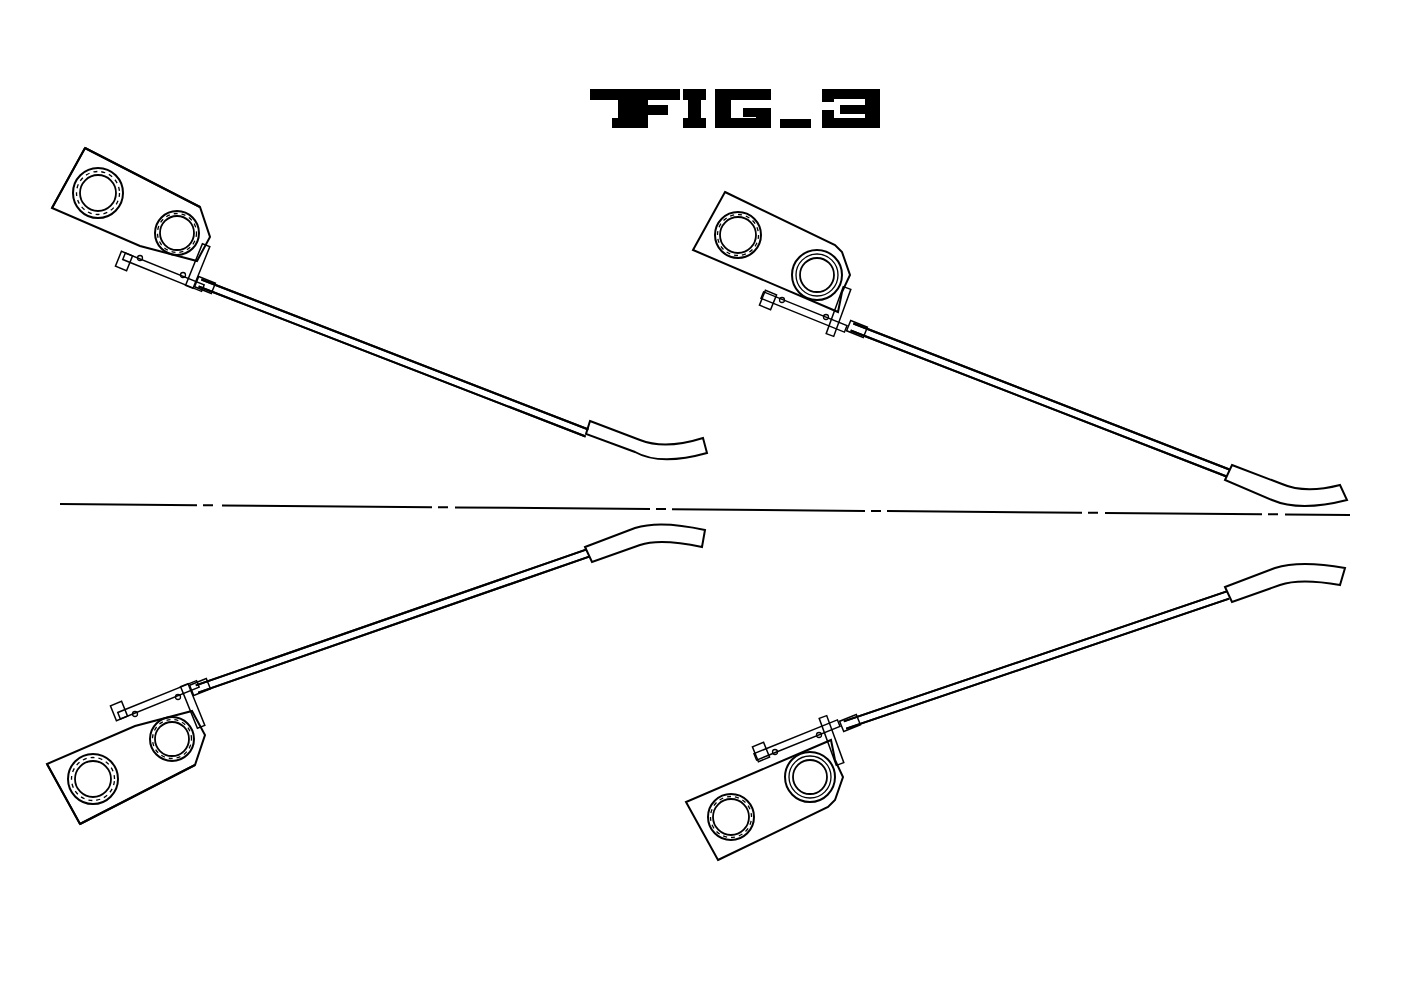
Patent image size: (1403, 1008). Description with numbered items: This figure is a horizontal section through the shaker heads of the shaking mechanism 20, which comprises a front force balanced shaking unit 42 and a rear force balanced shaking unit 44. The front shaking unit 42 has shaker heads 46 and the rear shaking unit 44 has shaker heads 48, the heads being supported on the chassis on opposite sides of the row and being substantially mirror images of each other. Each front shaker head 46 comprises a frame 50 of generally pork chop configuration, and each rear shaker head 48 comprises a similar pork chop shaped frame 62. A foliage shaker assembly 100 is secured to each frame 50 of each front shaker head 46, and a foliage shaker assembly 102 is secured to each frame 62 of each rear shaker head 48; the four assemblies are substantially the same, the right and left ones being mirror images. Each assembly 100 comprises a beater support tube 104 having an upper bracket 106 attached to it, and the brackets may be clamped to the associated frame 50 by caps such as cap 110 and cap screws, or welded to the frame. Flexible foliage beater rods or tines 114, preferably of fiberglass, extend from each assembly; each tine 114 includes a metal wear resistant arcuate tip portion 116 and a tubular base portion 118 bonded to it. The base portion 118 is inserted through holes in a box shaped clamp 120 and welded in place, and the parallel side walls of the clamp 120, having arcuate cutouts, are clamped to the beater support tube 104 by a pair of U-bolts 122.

The shaking mechanism 20 is at (697, 496).
The front force balanced shaking unit 42 is at (318, 487).
The rear force balanced shaking unit 44 is at (947, 534).
The front shaker head 46 is at (148, 487).
The rear shaker head 48 is at (770, 215).
The frame 50 is at (95, 227).
The frame 62 is at (712, 257).
The foliage shaker assembly 100 is at (485, 378).
The foliage shaker assembly 102 is at (1113, 420).
The beater support tube 104 is at (207, 218).
The upper bracket 106 is at (163, 197).
The cap 110 is at (98, 152).
The flexible foliage beater rod or tine 114 is at (420, 378).
The arcuate tip portion 116 is at (675, 453).
The tubular base portion 118 is at (163, 287).
The box shaped clamp 120 is at (207, 263).
The U-bolt 122 is at (835, 250).